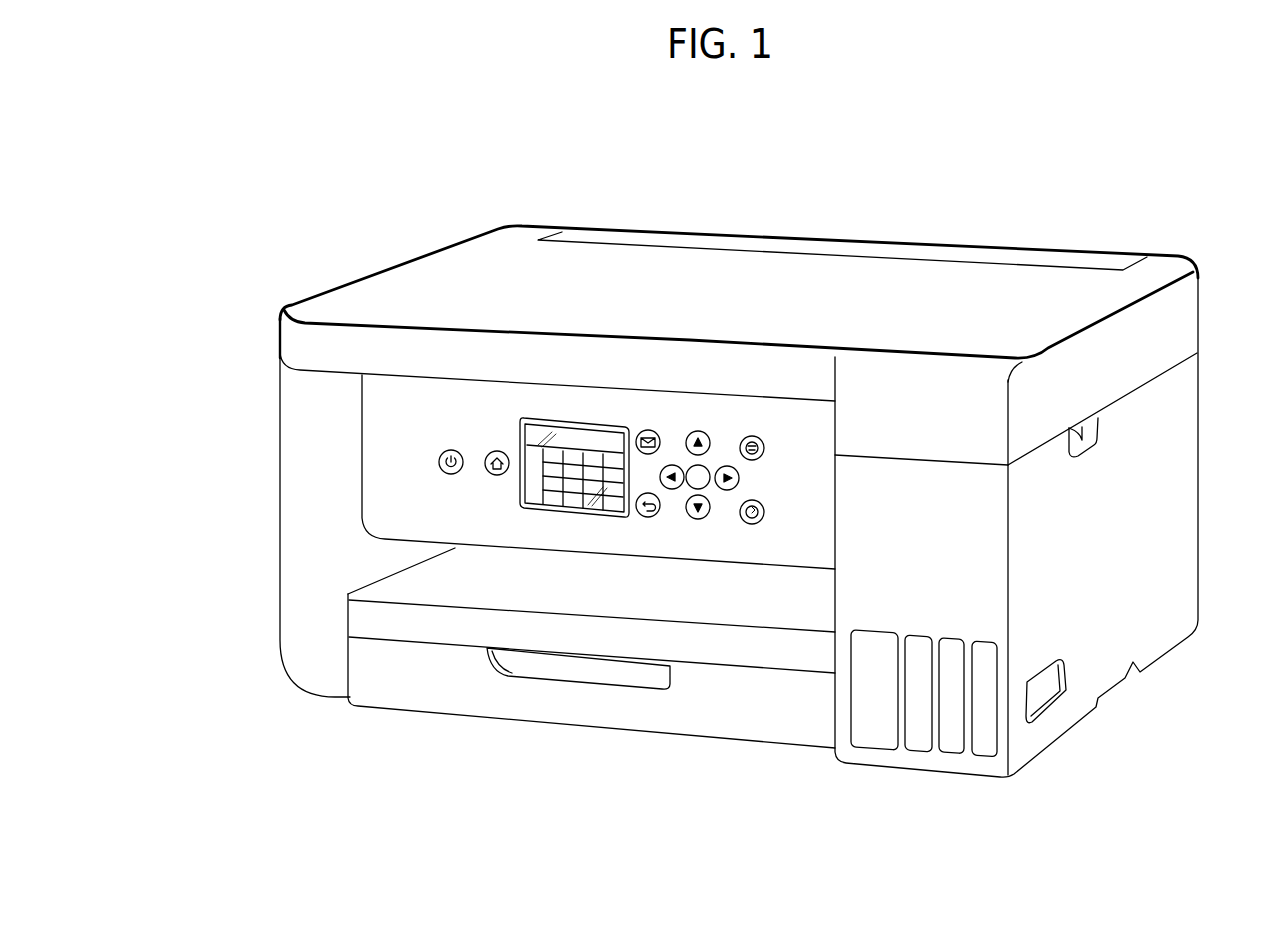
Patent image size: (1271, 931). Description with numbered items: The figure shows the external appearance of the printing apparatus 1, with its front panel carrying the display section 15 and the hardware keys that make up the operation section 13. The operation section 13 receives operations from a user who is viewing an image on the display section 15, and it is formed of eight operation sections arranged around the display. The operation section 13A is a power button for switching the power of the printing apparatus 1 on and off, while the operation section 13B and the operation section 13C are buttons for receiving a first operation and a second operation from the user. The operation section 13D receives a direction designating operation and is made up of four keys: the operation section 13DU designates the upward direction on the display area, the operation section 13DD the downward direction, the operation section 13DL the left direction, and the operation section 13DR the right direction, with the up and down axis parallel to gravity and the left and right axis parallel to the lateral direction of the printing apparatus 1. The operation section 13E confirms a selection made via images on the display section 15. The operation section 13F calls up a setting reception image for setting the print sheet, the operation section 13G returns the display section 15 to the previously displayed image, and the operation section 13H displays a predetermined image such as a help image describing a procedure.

The printing apparatus 1 is at (1155, 162).
The operation section 13 is at (695, 504).
The operation section 13A is at (451, 450).
The operation section 13B is at (497, 451).
The operation section 13C is at (757, 436).
The operation section 13D is at (752, 475).
The operation section 13DU is at (698, 431).
The operation section 13DL is at (672, 489).
The operation section 13DR is at (727, 490).
The operation section 13DD is at (698, 519).
The operation section 13E is at (707, 467).
The operation section 13F is at (648, 430).
The operation section 13G is at (647, 517).
The operation section 13H is at (762, 518).
The display section 15 is at (584, 418).